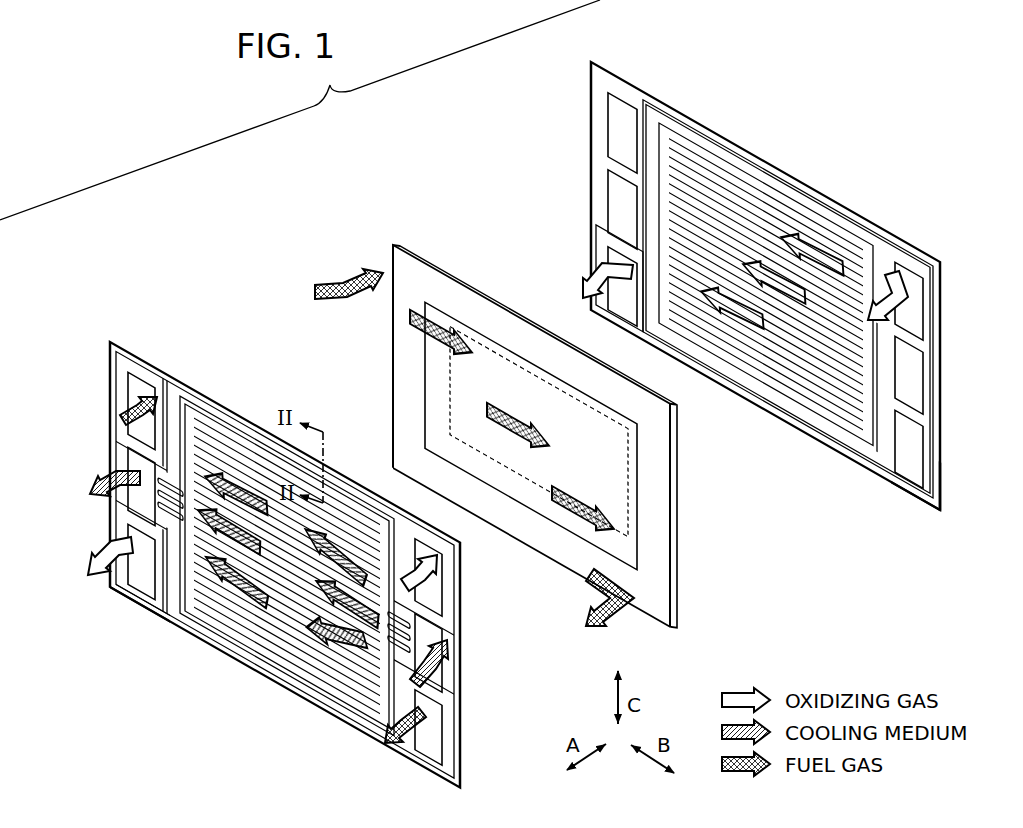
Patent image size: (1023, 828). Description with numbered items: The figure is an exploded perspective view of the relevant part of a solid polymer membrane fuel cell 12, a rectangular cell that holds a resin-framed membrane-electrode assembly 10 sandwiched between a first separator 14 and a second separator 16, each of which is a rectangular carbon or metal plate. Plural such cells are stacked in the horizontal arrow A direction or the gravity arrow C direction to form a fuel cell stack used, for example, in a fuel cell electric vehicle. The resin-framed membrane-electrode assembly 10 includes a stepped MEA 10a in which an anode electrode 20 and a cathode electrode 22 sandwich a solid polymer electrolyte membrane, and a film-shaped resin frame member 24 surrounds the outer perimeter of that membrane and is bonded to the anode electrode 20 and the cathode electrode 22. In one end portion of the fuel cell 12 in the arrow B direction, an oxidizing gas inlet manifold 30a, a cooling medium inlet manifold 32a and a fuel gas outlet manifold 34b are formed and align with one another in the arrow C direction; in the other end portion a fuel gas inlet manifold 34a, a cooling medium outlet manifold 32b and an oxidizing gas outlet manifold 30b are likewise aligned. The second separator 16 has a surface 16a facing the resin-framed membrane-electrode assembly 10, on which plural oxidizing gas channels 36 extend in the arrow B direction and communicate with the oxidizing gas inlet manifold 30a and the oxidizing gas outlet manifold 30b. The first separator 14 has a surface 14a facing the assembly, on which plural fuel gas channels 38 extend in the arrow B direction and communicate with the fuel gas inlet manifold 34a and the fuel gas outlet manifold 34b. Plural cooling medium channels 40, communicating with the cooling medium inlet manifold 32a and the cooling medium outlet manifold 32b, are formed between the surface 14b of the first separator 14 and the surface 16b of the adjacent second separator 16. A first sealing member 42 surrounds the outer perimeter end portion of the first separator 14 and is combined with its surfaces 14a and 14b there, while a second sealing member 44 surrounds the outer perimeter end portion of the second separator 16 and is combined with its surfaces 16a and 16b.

The resin-framed membrane-electrode assembly 10 is at (391, 241).
The stepped MEA 10a is at (511, 487).
The solid polymer membrane fuel cell 12 is at (327, 156).
The first separator 14 is at (121, 337).
The surface of first separator 14a is at (125, 592).
The surface of first separator 14b is at (147, 599).
The second separator 16 is at (586, 74).
The surface of second separator 16a is at (905, 481).
The surface of second separator 16b is at (920, 500).
The anode electrode 20 is at (440, 410).
The cathode electrode 22 is at (503, 375).
The resin frame member 24 is at (446, 254).
The oxidizing gas inlet manifold 30a is at (432, 590).
The oxidizing gas outlet manifold 30b is at (123, 525).
The cooling medium inlet manifold 32a is at (428, 632).
The cooling medium outlet manifold 32b is at (122, 457).
The fuel gas inlet manifold 34a is at (135, 395).
The fuel gas outlet manifold 34b is at (428, 722).
The oxidizing gas channels 36 is at (736, 195).
The fuel gas channels 38 is at (248, 452).
The cooling medium channels 40 is at (240, 608).
The first sealing member 42 is at (190, 394).
The second sealing member 44 is at (598, 222).